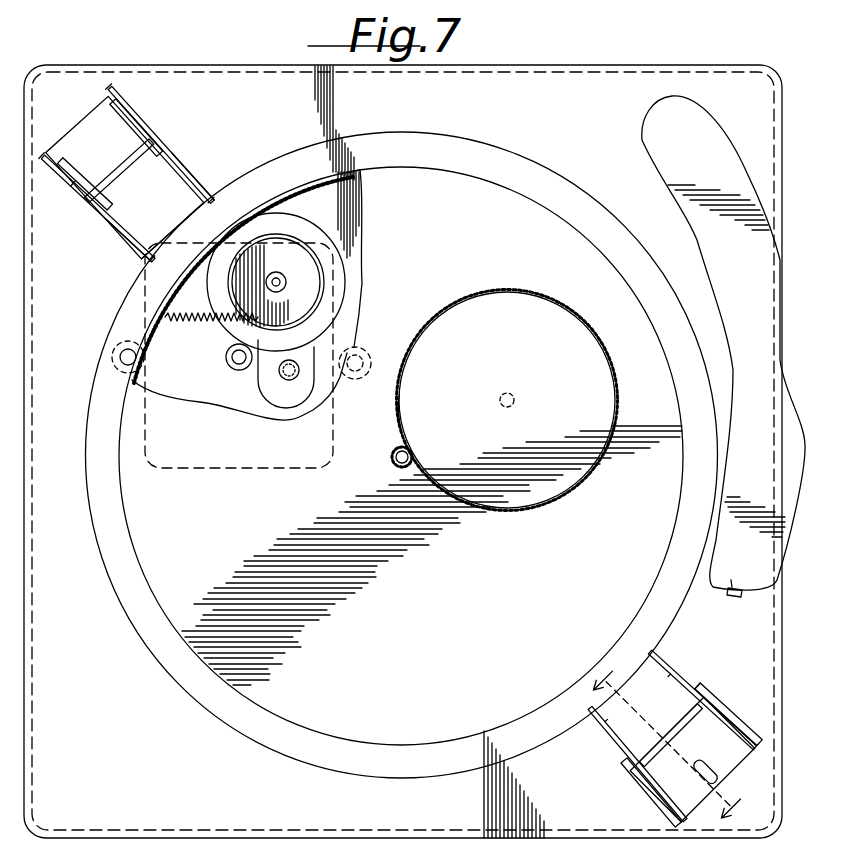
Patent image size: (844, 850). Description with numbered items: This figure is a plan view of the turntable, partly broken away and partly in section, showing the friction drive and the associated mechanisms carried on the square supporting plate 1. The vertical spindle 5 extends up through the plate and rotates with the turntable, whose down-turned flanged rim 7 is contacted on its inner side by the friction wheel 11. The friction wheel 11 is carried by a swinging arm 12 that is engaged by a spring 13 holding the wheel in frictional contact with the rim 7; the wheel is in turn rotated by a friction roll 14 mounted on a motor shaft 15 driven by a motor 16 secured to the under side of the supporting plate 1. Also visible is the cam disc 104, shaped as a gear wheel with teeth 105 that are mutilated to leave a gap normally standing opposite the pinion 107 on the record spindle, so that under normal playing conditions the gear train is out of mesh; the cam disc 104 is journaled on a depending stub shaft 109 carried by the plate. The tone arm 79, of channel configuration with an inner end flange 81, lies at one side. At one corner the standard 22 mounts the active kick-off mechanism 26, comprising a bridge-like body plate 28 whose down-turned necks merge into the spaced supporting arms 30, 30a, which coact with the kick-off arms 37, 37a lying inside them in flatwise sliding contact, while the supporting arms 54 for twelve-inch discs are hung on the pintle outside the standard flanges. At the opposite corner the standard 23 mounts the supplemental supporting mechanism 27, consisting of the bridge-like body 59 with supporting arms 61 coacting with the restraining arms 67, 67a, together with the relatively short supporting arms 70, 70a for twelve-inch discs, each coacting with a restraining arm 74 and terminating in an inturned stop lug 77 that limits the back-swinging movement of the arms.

The supporting plate 1 is at (607, 80).
The vertical spindle 5 is at (397, 467).
The flanged rim 7 is at (158, 308).
The friction wheel 11 is at (292, 229).
The swinging arm 12 is at (312, 378).
The spring 13 is at (185, 322).
The friction roll 14 is at (226, 351).
The motor shaft 15 is at (228, 358).
The motor 16 is at (216, 403).
The standard 22 is at (683, 731).
The standard 23 is at (128, 180).
The active kick-off mechanism 26 is at (712, 685).
The supplemental supporting mechanism 27 is at (81, 222).
The bridge-like body plate 28 is at (722, 764).
The supporting arm 30 is at (612, 738).
The supporting arm 30a is at (667, 662).
The kick-off arm 37 is at (650, 706).
The kick-off arm 37a is at (672, 688).
The supporting arm 54 is at (720, 703).
The bridge-like body 59 is at (90, 113).
The supporting arm 61 is at (150, 245).
The restraining arm 67 is at (120, 227).
The restraining arm 67a is at (180, 160).
The supporting arm 70 is at (80, 200).
The supporting arm 70a is at (148, 117).
The restraining arm 74 is at (145, 102).
The inturned stop lug 77 is at (108, 90).
The tone arm 79 is at (712, 231).
The inner end flange 81 is at (731, 596).
The cam disc 104 is at (527, 300).
The teeth 105 is at (398, 413).
The pinion 107 is at (392, 448).
The stub shaft 109 is at (518, 397).